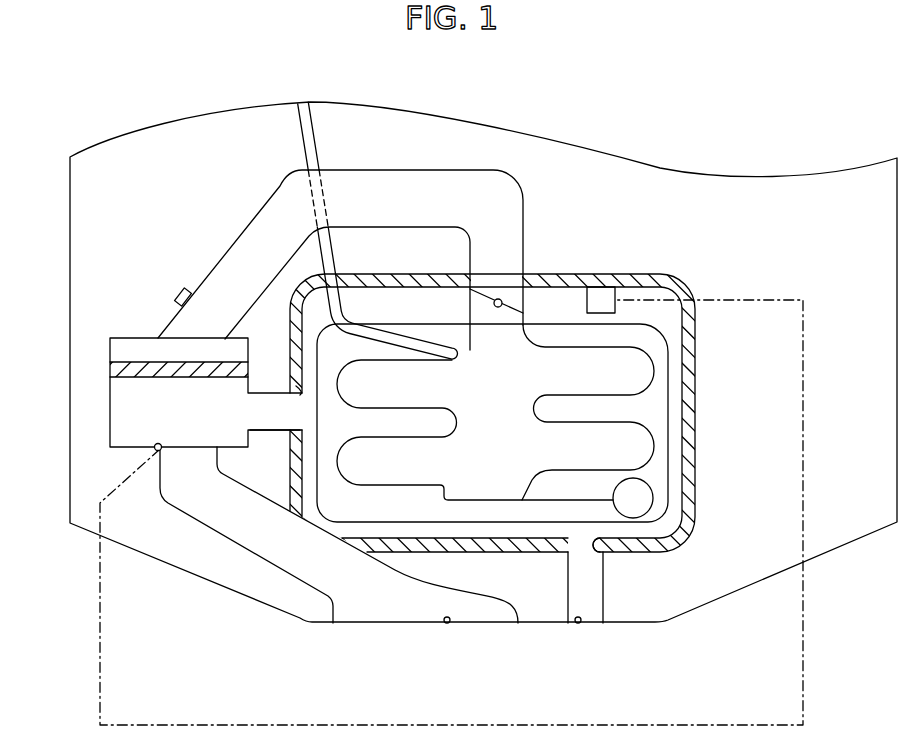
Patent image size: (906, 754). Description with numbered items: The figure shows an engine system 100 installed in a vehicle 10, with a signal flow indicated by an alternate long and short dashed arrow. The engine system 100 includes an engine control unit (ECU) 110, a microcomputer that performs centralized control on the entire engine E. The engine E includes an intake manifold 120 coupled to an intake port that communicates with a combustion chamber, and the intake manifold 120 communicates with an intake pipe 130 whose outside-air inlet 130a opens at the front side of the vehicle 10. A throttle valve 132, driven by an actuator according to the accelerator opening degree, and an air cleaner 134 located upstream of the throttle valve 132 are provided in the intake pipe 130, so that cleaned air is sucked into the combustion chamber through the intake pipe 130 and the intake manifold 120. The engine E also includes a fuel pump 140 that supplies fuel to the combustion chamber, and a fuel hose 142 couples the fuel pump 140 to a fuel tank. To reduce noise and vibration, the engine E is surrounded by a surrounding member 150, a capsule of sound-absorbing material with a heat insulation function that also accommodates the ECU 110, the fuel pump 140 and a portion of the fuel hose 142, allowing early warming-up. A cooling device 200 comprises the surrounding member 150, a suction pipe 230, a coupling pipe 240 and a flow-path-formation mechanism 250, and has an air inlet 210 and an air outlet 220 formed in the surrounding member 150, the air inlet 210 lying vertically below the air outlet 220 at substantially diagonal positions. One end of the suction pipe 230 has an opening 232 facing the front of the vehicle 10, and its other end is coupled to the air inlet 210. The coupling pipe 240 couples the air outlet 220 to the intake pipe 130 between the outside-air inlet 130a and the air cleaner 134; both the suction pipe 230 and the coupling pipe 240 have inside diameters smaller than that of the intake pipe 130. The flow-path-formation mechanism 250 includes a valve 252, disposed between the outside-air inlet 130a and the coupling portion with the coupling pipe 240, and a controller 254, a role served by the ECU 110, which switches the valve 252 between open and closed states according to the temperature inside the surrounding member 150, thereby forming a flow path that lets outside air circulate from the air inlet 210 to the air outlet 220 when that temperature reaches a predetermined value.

The vehicle 10 is at (858, 543).
The engine system 100 is at (225, 178).
The engine control unit (ECU) 110 is at (707, 256).
The intake manifold 120 is at (655, 437).
The intake pipe 130 is at (360, 170).
The outside-air inlet 130a is at (447, 623).
The throttle valve 132 is at (496, 286).
The air cleaner 134 is at (132, 362).
The fuel pump 140 is at (653, 493).
The fuel hose 142 is at (313, 130).
The surrounding member 150 is at (697, 358).
The cooling device 200 is at (685, 582).
The air inlet 210 is at (617, 553).
The air outlet 220 is at (298, 389).
The suction pipe 230 is at (604, 600).
The opening 232 is at (578, 623).
The coupling pipe 240 is at (270, 432).
The flow-path-formation mechanism 250 is at (187, 447).
The valve 252 is at (178, 368).
The controller 254 is at (600, 276).
The engine E is at (668, 402).